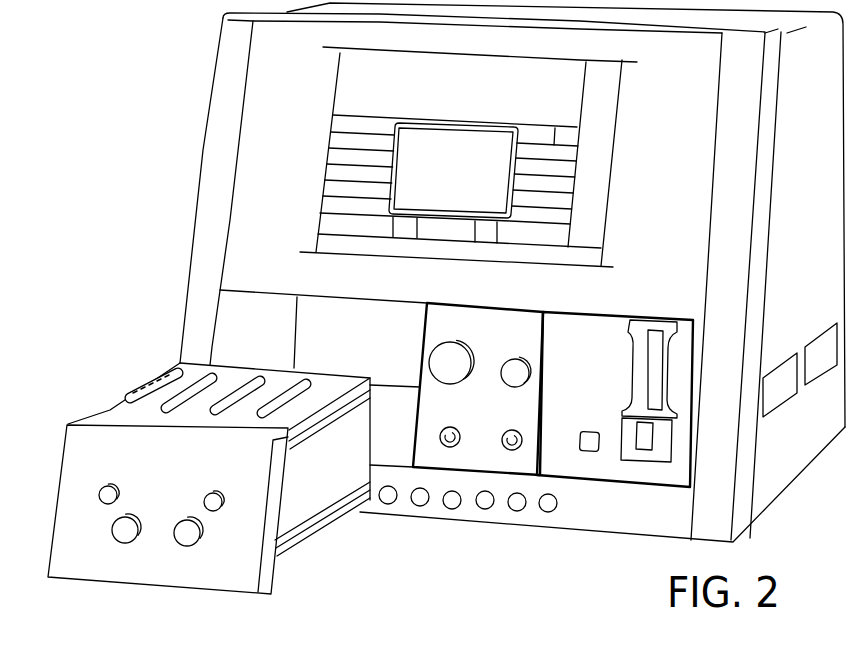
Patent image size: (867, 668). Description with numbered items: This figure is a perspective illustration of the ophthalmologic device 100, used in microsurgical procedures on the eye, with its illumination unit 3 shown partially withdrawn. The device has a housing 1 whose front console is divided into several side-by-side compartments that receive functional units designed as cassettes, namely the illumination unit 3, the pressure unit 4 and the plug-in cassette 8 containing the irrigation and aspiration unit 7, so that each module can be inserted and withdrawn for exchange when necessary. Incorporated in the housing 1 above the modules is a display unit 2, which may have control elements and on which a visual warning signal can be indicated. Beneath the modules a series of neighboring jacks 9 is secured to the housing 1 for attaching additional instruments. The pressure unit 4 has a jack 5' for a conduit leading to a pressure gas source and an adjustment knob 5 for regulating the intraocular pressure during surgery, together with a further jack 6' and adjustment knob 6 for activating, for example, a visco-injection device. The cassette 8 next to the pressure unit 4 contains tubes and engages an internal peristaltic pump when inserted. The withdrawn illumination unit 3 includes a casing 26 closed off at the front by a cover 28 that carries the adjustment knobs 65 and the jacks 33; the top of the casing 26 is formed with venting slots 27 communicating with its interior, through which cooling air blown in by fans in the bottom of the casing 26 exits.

The ophthalmologic device 100 is at (125, 238).
The housing 1 is at (190, 190).
The display unit 2 is at (622, 165).
The illumination unit 3 is at (100, 398).
The pressure unit 4 is at (504, 345).
The adjustment knob 5 is at (453, 326).
The adjustment knob 6 is at (525, 327).
The jack 5' is at (437, 492).
The jack 6' is at (502, 496).
The irrigation and aspiration unit 7 is at (600, 354).
The plug-in cassette 8 is at (620, 380).
The jacks 9 is at (563, 505).
The casing 26 is at (313, 483).
The venting slots 27 is at (207, 375).
The cover 28 is at (270, 568).
The jacks 33 is at (103, 505).
The adjustment knobs 65 is at (122, 538).